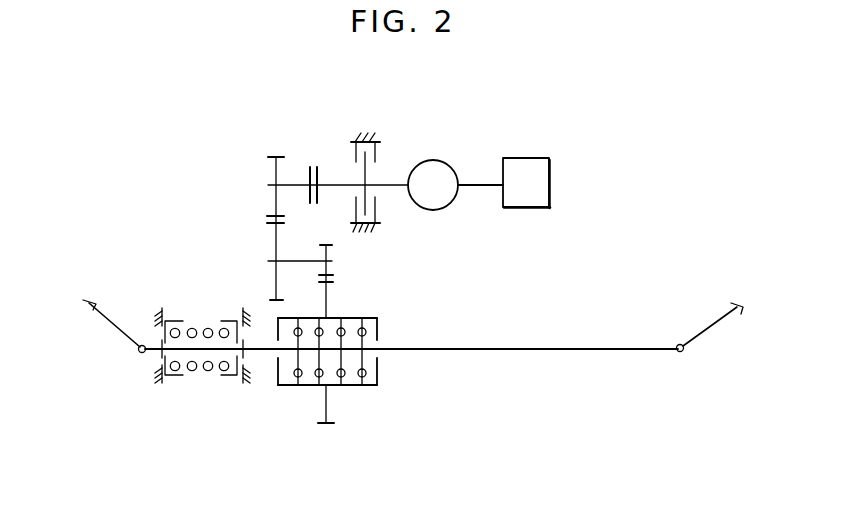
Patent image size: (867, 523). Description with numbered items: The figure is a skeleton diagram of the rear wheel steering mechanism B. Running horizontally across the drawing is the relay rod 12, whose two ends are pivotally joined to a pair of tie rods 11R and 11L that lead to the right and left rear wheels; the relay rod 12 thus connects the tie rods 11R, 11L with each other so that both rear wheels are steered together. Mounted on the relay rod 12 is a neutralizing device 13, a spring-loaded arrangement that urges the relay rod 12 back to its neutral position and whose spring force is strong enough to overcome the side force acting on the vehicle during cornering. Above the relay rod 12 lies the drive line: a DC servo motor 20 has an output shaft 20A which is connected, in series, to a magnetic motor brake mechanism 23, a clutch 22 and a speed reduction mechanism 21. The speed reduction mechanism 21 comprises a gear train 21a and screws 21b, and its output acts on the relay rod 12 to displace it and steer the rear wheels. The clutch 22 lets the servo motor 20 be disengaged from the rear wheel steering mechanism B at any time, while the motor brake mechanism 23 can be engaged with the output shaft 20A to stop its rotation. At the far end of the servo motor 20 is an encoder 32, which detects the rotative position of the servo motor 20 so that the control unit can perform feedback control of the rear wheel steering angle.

The tie rod 11R is at (105, 325).
The tie rod 11L is at (717, 323).
The relay rod 12 is at (518, 351).
The neutralizing device 13 is at (206, 384).
The DC servo motor 20 is at (437, 160).
The output shaft 20A is at (403, 188).
The speed reduction mechanism 21 is at (372, 334).
The gear train 21a is at (343, 283).
The screws 21b is at (321, 329).
The clutch 22 is at (312, 164).
The magnetic motor brake mechanism 23 is at (368, 131).
The encoder 32 is at (550, 170).
The rear wheel steering mechanism B is at (603, 355).